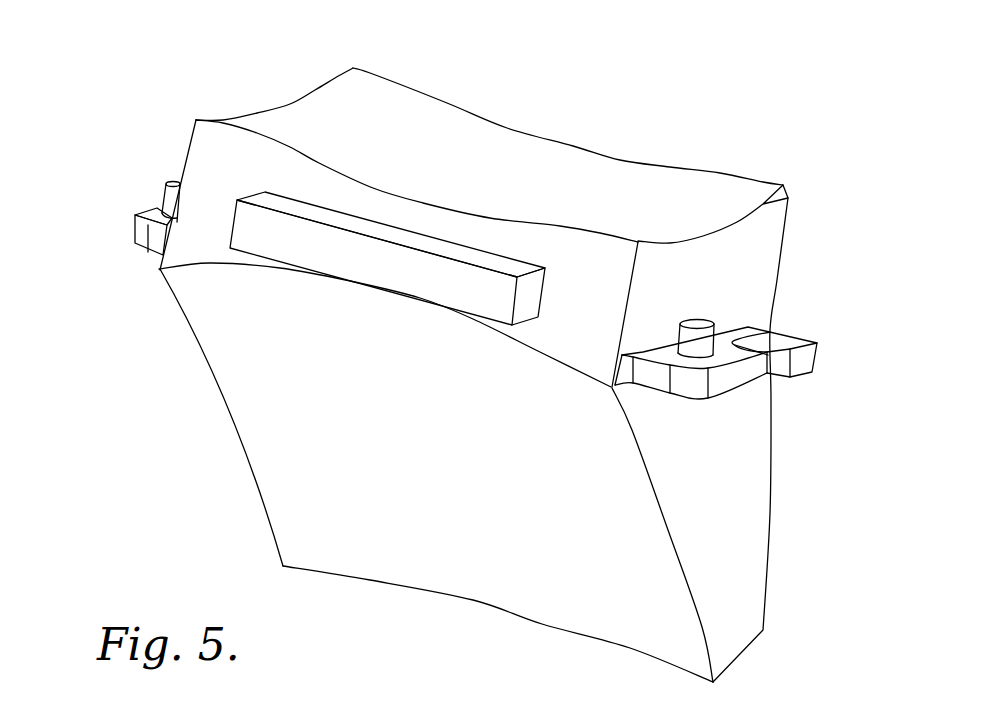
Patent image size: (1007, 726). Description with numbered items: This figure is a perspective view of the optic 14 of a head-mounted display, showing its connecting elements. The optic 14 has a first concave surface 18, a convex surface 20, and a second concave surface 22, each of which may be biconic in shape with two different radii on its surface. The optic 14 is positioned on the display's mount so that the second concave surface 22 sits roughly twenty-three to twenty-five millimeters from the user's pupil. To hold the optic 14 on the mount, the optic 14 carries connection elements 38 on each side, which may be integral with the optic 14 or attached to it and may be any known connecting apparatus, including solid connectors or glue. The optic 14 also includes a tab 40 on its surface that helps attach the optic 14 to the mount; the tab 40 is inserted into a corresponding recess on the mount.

The optic 14 is at (460, 353).
The first concave surface 18 is at (387, 138).
The convex surface 20 is at (772, 513).
The second concave surface 22 is at (527, 551).
The connection elements 38 is at (147, 213).
The tab 40 is at (302, 242).